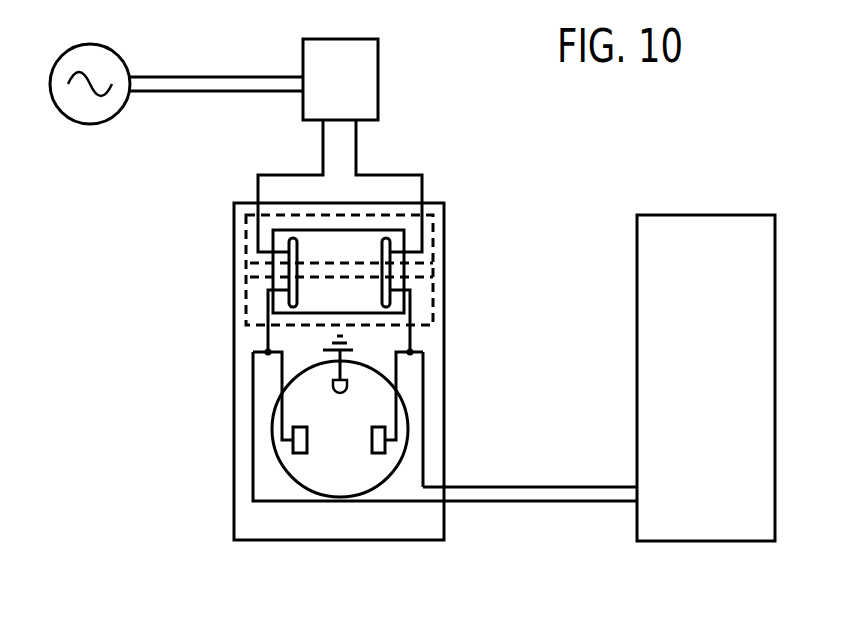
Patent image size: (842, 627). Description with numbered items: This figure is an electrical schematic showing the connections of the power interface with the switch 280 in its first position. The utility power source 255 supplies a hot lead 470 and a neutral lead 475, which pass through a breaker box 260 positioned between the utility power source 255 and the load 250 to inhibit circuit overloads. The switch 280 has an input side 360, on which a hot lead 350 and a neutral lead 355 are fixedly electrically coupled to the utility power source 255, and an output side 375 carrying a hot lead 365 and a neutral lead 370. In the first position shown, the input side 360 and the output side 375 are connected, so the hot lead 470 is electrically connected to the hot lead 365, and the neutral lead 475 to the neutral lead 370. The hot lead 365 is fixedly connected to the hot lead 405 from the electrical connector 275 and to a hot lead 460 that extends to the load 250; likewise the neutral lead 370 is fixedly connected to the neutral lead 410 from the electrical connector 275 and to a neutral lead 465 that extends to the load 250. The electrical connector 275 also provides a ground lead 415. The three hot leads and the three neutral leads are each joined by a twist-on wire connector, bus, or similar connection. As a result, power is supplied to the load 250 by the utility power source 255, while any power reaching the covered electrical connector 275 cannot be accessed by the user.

The load 250 is at (727, 373).
The utility power source 255 is at (90, 44).
The breaker box 260 is at (340, 38).
The electrical connector 275 is at (283, 478).
The switch 280 is at (250, 269).
The hot lead 350 is at (402, 177).
The neutral lead 355 is at (277, 177).
The input side 360 is at (433, 235).
The hot lead 365 is at (412, 337).
The neutral lead 370 is at (268, 335).
The output side 375 is at (433, 298).
The hot lead 405 is at (397, 372).
The neutral lead 410 is at (266, 353).
The ground lead 415 is at (307, 376).
The hot lead 460 is at (555, 487).
The neutral lead 465 is at (553, 503).
The hot lead 470 is at (217, 77).
The neutral lead 475 is at (217, 92).